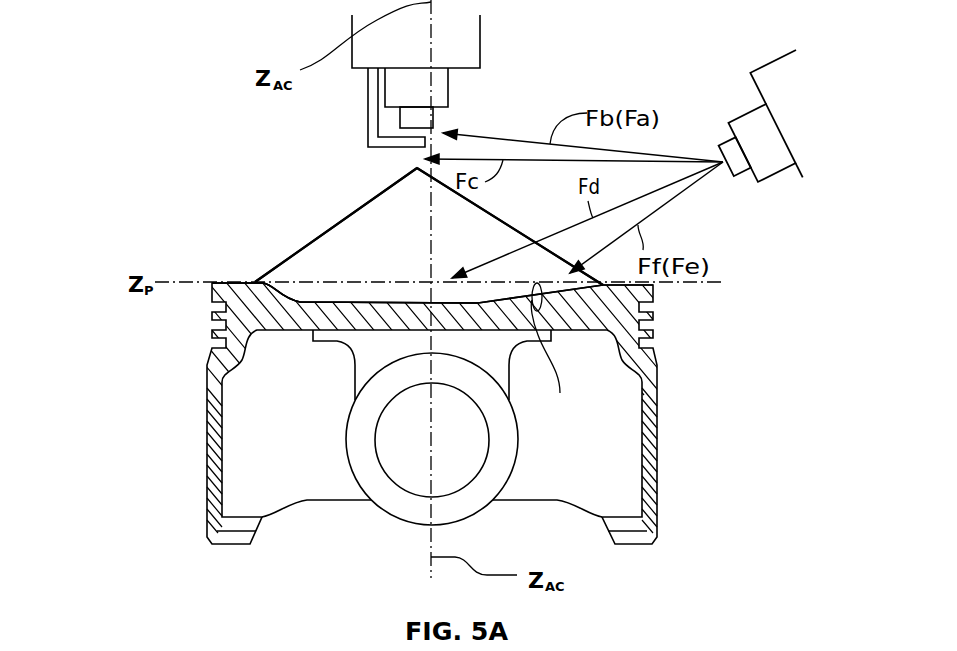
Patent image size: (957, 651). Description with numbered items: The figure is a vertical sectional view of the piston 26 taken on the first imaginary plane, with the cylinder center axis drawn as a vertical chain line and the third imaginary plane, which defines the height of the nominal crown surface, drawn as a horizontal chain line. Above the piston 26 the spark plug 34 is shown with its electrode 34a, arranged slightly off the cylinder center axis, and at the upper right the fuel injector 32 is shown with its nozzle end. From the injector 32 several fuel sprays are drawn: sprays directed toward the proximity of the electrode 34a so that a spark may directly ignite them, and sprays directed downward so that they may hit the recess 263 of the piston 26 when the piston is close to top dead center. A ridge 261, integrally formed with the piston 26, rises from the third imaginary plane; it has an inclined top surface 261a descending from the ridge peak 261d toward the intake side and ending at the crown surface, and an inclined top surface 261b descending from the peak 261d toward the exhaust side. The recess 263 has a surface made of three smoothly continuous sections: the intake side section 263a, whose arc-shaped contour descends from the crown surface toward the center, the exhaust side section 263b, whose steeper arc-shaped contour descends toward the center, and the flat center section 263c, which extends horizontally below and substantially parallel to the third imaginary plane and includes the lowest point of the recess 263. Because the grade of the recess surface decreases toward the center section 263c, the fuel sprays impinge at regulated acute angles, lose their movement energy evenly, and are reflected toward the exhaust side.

The piston 26 is at (208, 377).
The fuel injector 32 is at (762, 172).
The spark plug 34 is at (470, 50).
The electrode 34a is at (433, 115).
The ridge 261 is at (383, 213).
The inclined top surface 261a is at (512, 228).
The inclined top surface 261b is at (300, 245).
The ridge peak 261d is at (416, 168).
The recess 263 is at (407, 302).
The intake side section 263a is at (560, 353).
The exhaust side section 263b is at (285, 283).
The center section 263c is at (372, 302).